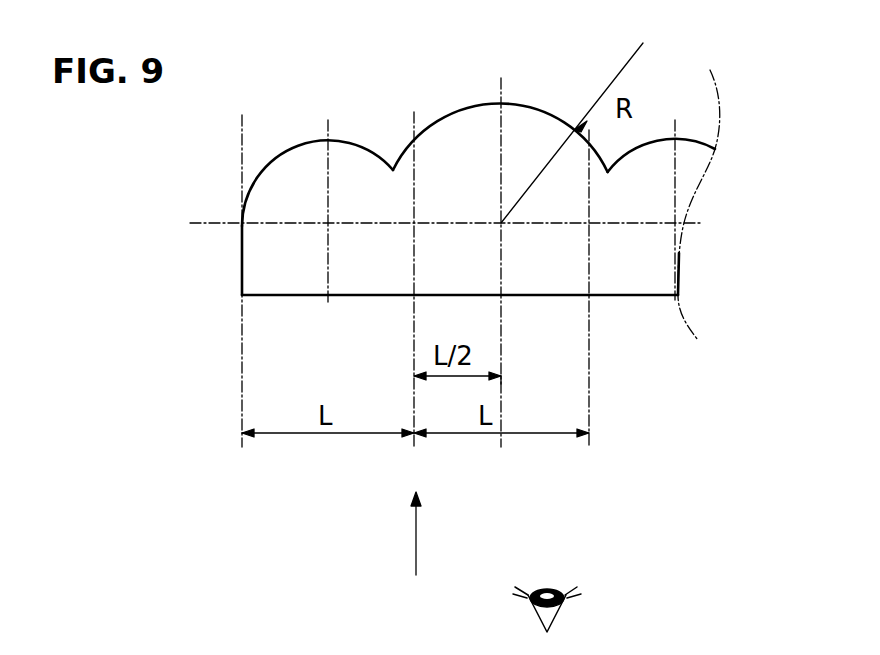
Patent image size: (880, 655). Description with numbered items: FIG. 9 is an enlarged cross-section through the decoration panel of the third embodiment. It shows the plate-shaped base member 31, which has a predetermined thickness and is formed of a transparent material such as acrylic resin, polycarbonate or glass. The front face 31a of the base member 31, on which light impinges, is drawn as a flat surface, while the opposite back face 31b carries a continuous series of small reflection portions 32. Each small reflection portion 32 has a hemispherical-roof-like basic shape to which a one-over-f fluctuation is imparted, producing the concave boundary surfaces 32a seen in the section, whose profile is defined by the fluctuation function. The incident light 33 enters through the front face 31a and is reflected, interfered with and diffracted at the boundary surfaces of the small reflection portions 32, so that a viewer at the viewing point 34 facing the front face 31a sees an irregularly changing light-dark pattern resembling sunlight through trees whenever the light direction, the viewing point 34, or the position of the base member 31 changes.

The base member 31 is at (255, 332).
The front face 31a is at (633, 297).
The back face 31b is at (366, 222).
The small reflection portion 32 is at (292, 143).
The concave boundary surface 32a is at (420, 118).
The incident light 33 is at (417, 540).
The viewing point 34 is at (557, 615).